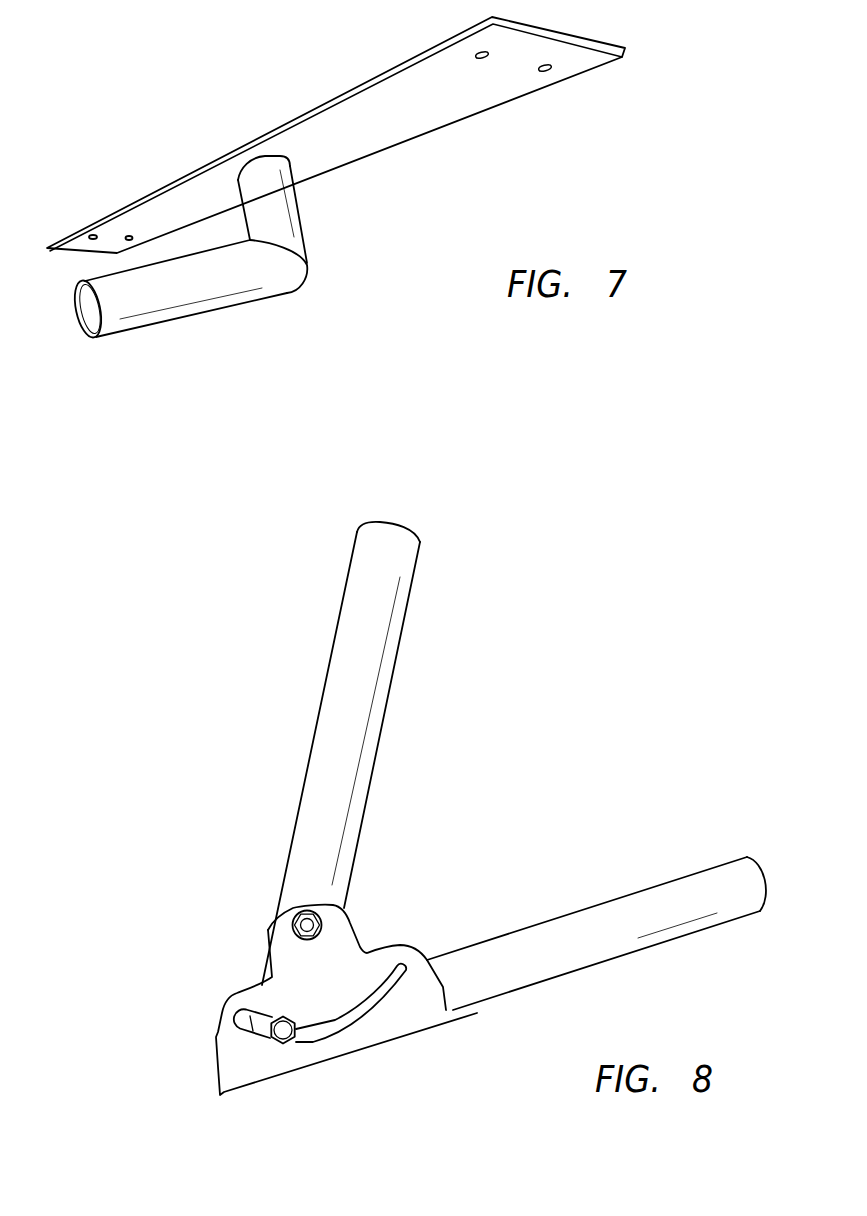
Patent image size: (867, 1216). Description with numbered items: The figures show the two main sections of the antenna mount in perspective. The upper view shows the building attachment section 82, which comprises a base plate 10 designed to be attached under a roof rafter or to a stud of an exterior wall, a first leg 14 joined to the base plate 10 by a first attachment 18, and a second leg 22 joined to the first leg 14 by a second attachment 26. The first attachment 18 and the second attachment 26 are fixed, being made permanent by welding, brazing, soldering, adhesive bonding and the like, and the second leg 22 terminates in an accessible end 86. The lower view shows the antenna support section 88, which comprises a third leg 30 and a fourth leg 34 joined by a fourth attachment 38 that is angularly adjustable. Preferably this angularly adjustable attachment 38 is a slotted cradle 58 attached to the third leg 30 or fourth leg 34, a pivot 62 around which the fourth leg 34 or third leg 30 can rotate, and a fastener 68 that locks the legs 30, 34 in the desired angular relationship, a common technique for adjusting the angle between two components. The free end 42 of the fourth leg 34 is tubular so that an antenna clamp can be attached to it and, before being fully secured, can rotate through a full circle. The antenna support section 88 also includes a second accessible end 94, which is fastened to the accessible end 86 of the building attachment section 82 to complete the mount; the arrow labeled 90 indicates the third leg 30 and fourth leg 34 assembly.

In FIG. 7, the base plate 10 is at (478, 80).
In FIG. 7, the first leg 14 is at (354, 204).
In FIG. 7, the first attachment 18 is at (277, 156).
In FIG. 7, the second leg 22 is at (190, 317).
In FIG. 7, the second attachment 26 is at (307, 270).
In FIG. 7, the building attachment section 82 is at (236, 304).
In FIG. 7, the accessible end 86 is at (68, 320).
In FIG. 8, the antenna support section 88 is at (451, 794).
In FIG. 8, the first tube assembly 90 is at (291, 699).
In FIG. 8, the second accessible end 94 is at (405, 512).
In FIG. 8, the fourth leg 34 is at (382, 699).
In FIG. 8, the fourth attachment 38 is at (393, 915).
In FIG. 8, the third leg 30 is at (625, 833).
In FIG. 8, the free end 42 is at (780, 857).
In FIG. 8, the pivot 62 is at (307, 925).
In FIG. 8, the fastener 68 is at (288, 1037).
In FIG. 8, the slotted cradle 58 is at (363, 1037).